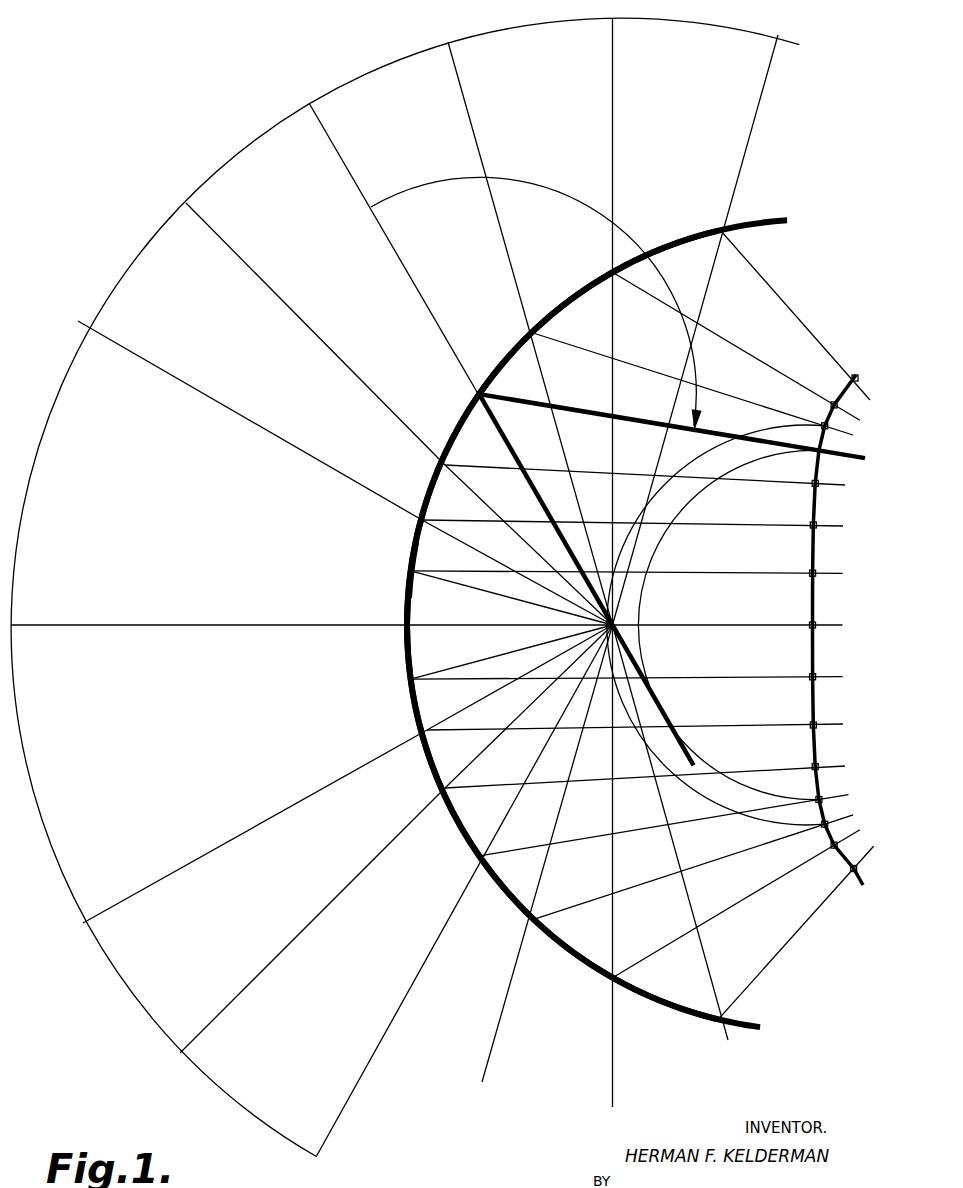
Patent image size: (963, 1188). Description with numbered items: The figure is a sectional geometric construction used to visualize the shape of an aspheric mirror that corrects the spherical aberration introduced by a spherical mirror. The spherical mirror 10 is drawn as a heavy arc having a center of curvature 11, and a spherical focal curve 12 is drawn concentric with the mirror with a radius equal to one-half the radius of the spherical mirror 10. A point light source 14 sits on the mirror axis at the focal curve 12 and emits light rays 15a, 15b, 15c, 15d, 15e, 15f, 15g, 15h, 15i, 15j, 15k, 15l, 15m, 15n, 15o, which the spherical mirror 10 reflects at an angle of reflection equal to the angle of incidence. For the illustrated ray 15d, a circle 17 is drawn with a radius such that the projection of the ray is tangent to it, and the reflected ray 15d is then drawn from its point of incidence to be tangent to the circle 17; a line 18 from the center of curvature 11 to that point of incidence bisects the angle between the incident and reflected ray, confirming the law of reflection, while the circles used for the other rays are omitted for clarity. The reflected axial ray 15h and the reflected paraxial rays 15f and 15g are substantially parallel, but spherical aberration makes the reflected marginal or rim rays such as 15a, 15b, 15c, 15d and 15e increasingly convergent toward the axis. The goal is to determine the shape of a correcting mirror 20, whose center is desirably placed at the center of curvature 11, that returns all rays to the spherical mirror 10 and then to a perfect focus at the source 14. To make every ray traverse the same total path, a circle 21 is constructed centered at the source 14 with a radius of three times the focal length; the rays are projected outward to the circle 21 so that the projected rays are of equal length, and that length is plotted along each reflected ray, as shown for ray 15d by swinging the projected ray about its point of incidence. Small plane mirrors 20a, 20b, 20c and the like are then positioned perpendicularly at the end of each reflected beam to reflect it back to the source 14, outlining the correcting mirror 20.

The spherical mirror 10 is at (437, 776).
The center of curvature 11 is at (810, 628).
The spherical focal curve 12 is at (660, 753).
The point light source 14 is at (615, 623).
The light ray 15a is at (757, 270).
The light ray 15b is at (645, 297).
The light ray 15c is at (540, 342).
The light ray 15d is at (490, 428).
The light ray 15e is at (497, 468).
The paraxial ray 15f is at (533, 523).
The paraxial ray 15g is at (462, 580).
The axial ray 15h is at (463, 625).
The light ray 15i is at (478, 680).
The light ray 15j is at (472, 730).
The light ray 15k is at (472, 788).
The light ray 15l is at (518, 852).
The light ray 15m is at (560, 907).
The light ray 15n is at (640, 963).
The light ray 15o is at (760, 987).
The circle 17 is at (770, 452).
The line 18 is at (727, 563).
The correcting mirror 20 is at (815, 658).
The small plane mirror 20a is at (856, 377).
The small plane mirror 20b is at (840, 384).
The small plane mirror 20c is at (818, 413).
The circle 21 is at (145, 245).